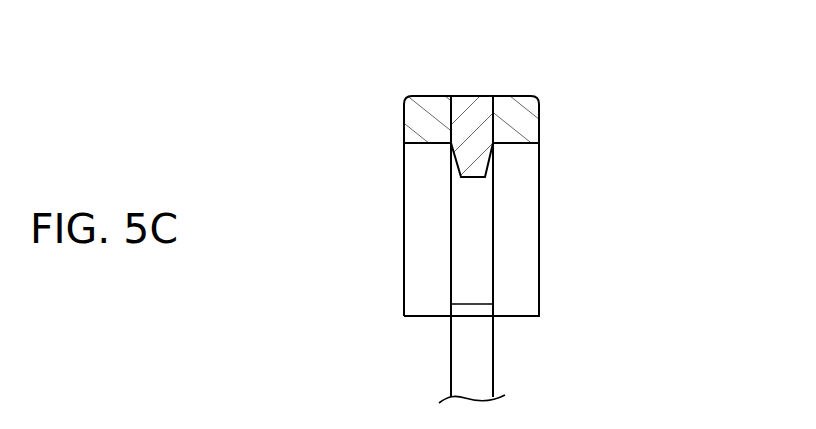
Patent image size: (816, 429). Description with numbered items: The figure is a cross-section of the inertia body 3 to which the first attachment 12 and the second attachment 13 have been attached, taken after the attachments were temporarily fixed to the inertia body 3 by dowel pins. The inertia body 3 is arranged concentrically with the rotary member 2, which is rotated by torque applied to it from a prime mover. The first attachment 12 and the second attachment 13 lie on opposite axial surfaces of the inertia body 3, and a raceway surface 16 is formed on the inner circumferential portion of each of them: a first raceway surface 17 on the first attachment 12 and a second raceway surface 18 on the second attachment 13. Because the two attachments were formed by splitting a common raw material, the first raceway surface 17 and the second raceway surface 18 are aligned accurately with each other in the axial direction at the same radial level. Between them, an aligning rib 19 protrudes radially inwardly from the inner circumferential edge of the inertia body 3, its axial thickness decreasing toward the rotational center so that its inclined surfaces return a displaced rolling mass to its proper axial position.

The rotary member 2 is at (478, 375).
The inertia body 3 is at (478, 110).
The first attachment 12 is at (423, 97).
The second attachment 13 is at (528, 110).
The raceway surface 16 is at (461, 179).
The first raceway surface 17 is at (423, 143).
The second raceway surface 18 is at (515, 143).
The aligning rib 19 is at (477, 167).